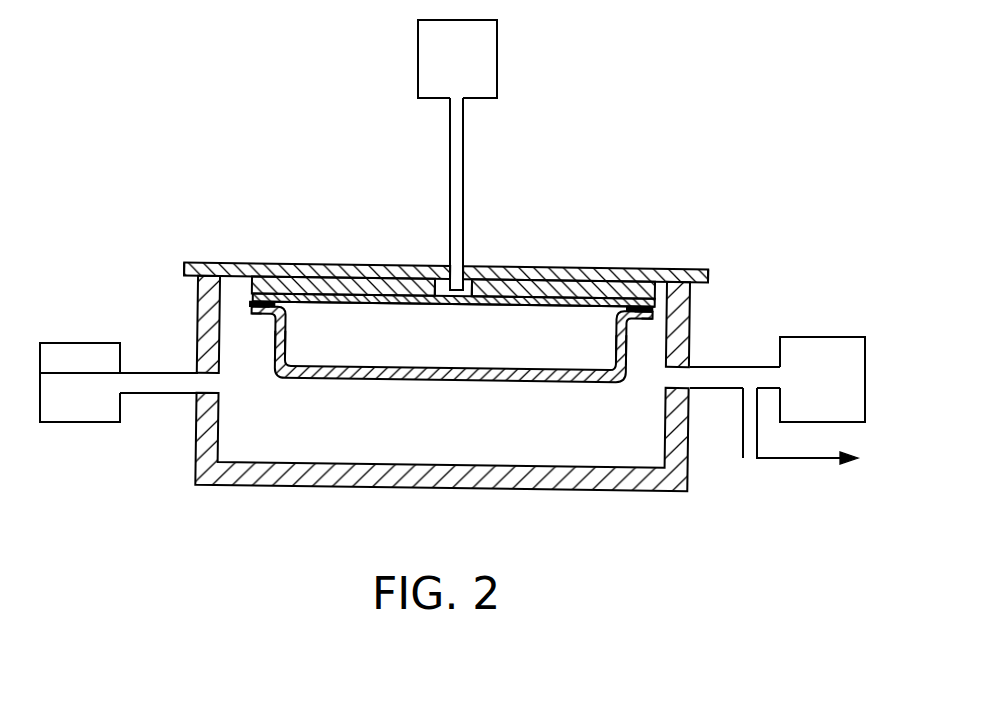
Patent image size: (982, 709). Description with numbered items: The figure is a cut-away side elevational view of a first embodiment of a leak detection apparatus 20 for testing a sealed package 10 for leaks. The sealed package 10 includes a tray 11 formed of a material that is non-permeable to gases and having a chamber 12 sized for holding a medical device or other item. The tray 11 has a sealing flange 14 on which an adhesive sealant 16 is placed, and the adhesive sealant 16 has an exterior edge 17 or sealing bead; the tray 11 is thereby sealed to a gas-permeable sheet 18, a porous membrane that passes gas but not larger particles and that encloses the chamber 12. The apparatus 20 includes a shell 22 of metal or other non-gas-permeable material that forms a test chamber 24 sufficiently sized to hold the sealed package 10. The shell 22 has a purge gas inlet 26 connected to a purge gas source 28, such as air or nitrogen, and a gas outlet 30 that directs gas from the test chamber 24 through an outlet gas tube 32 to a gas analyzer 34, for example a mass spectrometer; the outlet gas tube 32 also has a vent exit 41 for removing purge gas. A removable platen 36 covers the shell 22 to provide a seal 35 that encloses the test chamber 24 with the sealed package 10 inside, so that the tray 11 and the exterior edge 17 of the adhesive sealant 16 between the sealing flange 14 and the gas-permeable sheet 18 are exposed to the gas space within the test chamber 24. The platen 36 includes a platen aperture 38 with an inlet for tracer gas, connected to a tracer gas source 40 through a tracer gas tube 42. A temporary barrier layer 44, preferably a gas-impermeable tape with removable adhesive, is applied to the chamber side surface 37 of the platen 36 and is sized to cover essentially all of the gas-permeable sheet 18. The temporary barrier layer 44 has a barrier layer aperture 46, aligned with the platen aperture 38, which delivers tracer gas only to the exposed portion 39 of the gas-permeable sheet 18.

The sealed package 10 is at (533, 383).
The tray 11 is at (334, 378).
The chamber 12 is at (504, 350).
The sealing flange 14 is at (266, 316).
The adhesive sealant 16 is at (617, 313).
The exterior edge 17 is at (656, 315).
The gas-permeable sheet 18 is at (340, 302).
The leak detection apparatus 20 is at (658, 160).
The shell 22 is at (535, 489).
The test chamber 24 is at (452, 437).
The purge gas inlet 26 is at (215, 385).
The purge gas source 28 is at (98, 401).
The gas outlet 30 is at (668, 373).
The outlet gas tube 32 is at (784, 442).
The gas analyzer 34 is at (839, 401).
The seal 35 is at (692, 285).
The platen 36 is at (622, 268).
The chamber side surface 37 is at (228, 263).
The platen aperture 38 is at (455, 265).
The exposed portion 39 is at (448, 300).
The tracer gas source 40 is at (476, 71).
The vent exit 41 is at (823, 468).
The tracer gas tube 42 is at (464, 183).
The temporary barrier layer 44 is at (252, 286).
The barrier layer aperture 46 is at (447, 289).